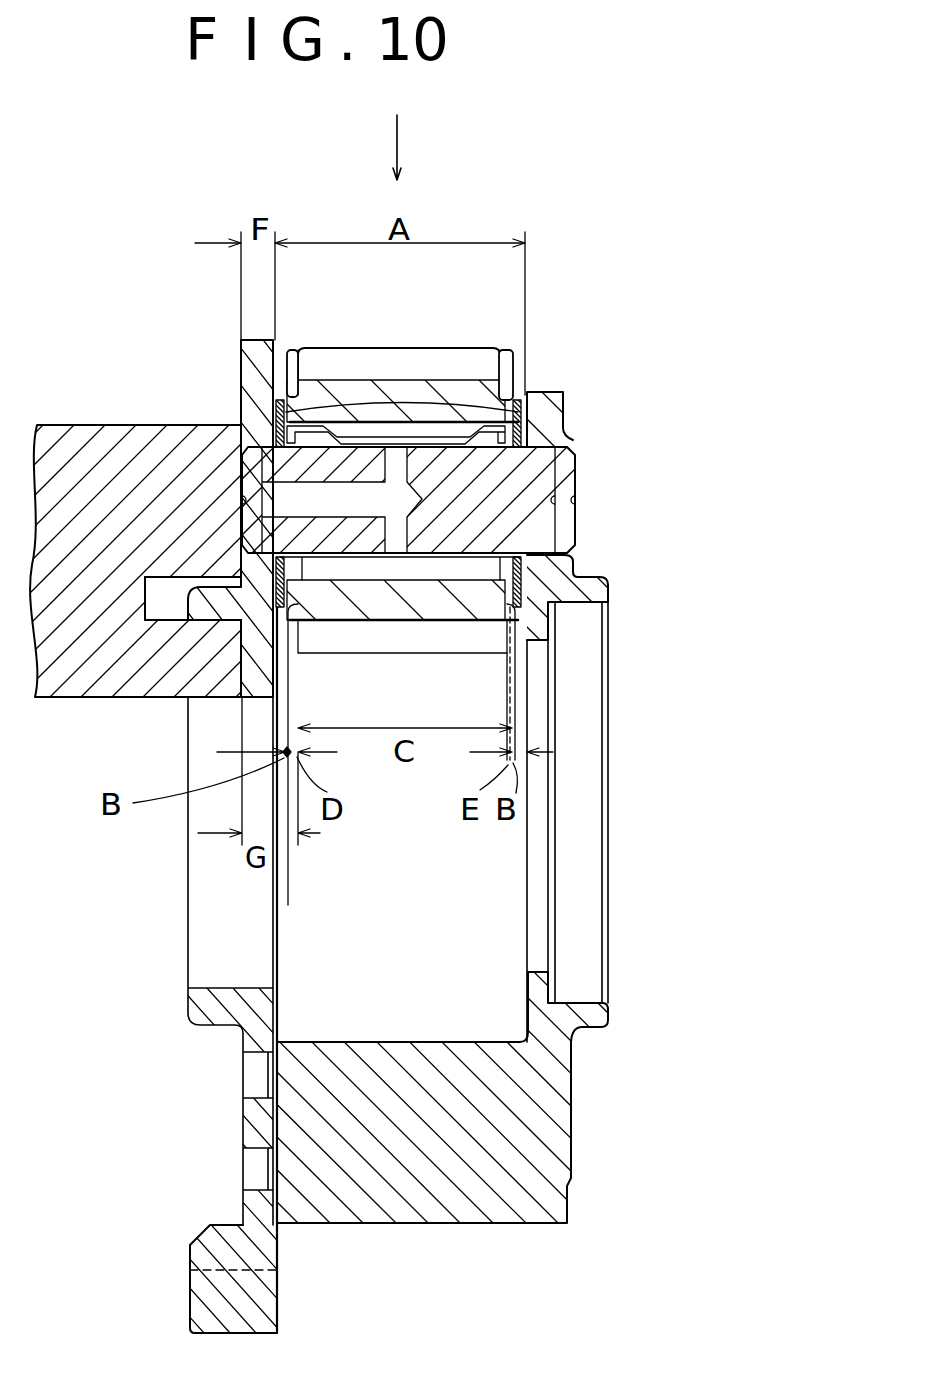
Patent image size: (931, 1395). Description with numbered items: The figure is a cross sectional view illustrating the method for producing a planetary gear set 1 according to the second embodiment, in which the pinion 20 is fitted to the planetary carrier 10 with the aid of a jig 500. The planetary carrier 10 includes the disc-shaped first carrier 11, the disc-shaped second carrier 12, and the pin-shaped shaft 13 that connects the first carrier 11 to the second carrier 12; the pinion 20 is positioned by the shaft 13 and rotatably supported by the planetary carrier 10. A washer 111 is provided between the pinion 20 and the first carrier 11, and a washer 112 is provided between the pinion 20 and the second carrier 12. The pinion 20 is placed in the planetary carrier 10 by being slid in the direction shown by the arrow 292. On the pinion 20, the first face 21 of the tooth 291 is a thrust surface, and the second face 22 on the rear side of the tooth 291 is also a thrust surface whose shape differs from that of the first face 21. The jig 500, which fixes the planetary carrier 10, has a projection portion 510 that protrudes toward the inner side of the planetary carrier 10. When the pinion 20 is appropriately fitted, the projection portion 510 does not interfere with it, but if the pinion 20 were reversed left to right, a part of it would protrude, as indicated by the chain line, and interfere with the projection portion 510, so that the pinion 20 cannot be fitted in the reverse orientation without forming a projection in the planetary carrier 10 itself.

The planetary gear set 1 is at (609, 325).
The planetary carrier 10 is at (640, 386).
The first carrier 11 is at (520, 416).
The second carrier 12 is at (548, 422).
The shaft 13 is at (540, 483).
The pinion 20 is at (382, 330).
The first face 21 is at (296, 350).
The second face 22 is at (518, 356).
The washer 111 is at (262, 595).
The washer 112 is at (525, 578).
The tooth 291 is at (448, 346).
The arrow 292 is at (400, 136).
The jig 500 is at (95, 423).
The projection portion 510 is at (310, 683).